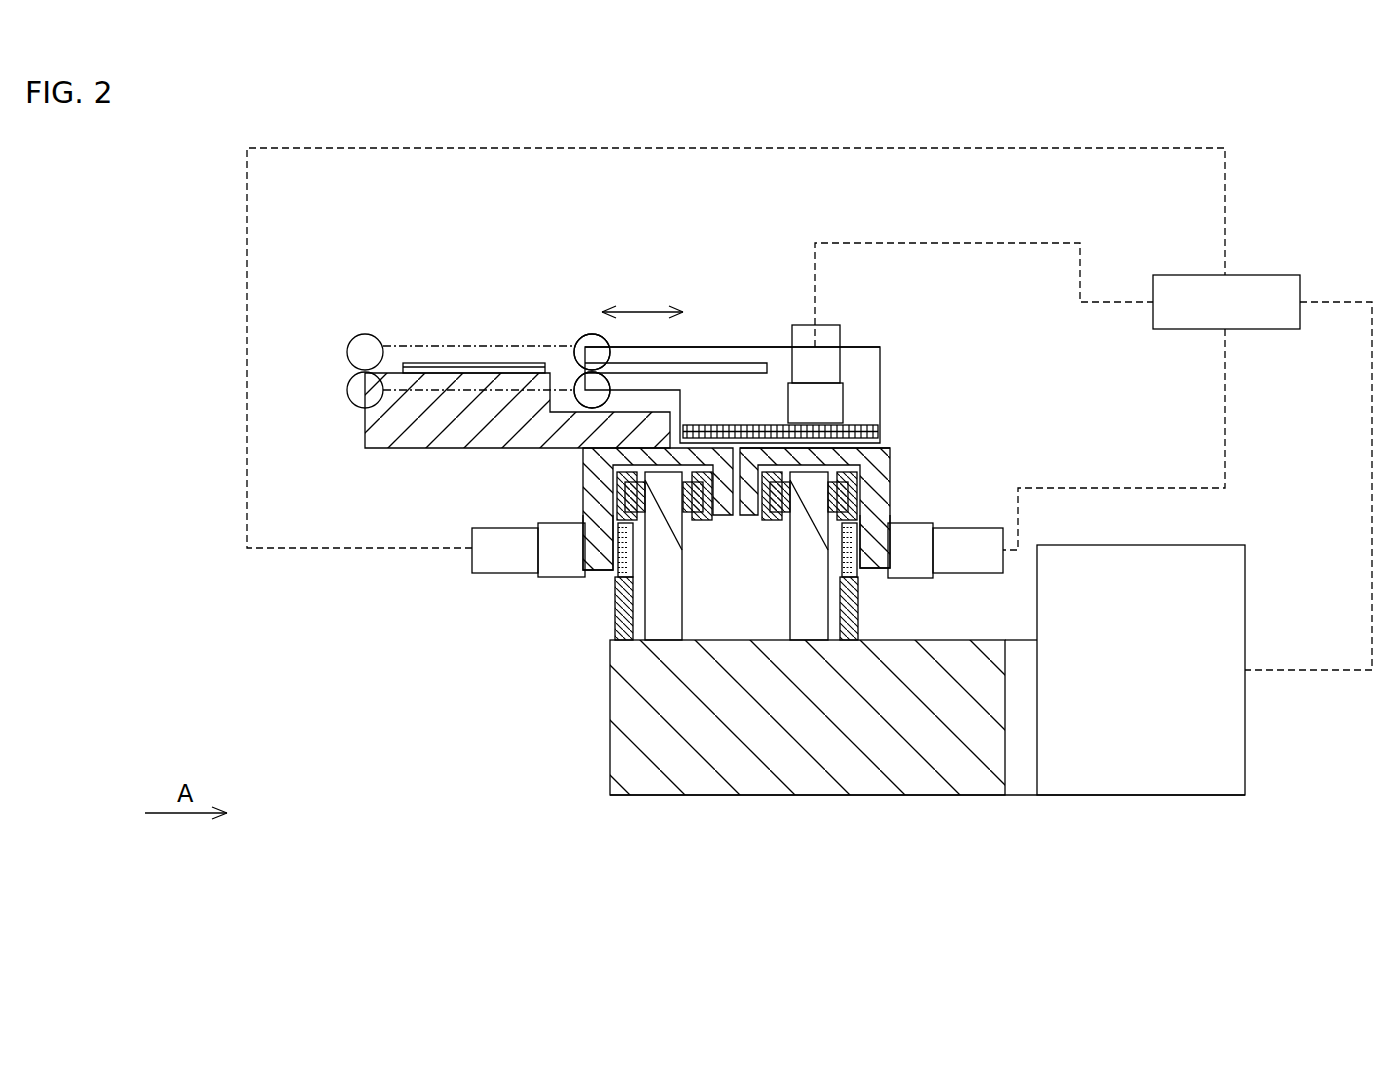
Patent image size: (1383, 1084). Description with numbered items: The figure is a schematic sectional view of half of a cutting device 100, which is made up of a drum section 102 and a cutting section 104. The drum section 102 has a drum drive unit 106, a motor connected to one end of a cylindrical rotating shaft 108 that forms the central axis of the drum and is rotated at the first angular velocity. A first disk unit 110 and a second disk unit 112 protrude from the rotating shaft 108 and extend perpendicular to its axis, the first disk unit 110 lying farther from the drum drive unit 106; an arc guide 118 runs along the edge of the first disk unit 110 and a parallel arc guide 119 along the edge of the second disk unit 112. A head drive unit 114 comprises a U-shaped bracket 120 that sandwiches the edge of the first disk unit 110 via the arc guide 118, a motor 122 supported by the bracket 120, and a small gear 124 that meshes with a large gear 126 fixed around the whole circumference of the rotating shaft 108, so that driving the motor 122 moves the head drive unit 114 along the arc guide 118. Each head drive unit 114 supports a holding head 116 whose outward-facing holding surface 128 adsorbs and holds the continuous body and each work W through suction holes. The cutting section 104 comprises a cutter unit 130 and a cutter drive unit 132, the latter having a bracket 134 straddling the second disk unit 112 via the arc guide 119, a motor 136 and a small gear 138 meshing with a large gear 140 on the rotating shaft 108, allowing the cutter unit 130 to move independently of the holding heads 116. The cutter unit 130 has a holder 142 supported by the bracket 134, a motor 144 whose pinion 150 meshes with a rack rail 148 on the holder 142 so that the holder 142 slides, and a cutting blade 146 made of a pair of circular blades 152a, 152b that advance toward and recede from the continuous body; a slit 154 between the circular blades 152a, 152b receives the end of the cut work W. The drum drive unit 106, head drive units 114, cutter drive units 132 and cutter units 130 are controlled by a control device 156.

The cutting device 100 is at (848, 920).
The drum section 102 is at (926, 799).
The cutting section 104 is at (770, 300).
The drum drive unit 106 is at (1245, 567).
The rotating shaft 108 is at (610, 757).
The first disk unit 110 is at (686, 605).
The second disk unit 112 is at (792, 605).
The head drive unit 114 is at (597, 572).
The holding head 116 is at (364, 437).
The arc guide 118 is at (620, 455).
The arc guide 119 is at (892, 466).
The bracket 120 is at (583, 493).
The motor 122 is at (485, 580).
The small gear 124 is at (633, 552).
The large gear 126 is at (612, 627).
The holding surface 128 is at (396, 371).
The cutter unit 130 is at (884, 347).
The cutter drive unit 132 is at (892, 446).
The bracket 134 is at (893, 497).
The motor 136 is at (975, 523).
The small gear 138 is at (842, 563).
The large gear 140 is at (860, 615).
The holder 142 is at (715, 347).
The motor 144 is at (846, 325).
The cutting blade 146 is at (632, 235).
The rack rail 148 is at (880, 430).
The pinion 150 is at (843, 402).
The circular blade 152a is at (593, 334).
The circular blade 152b is at (573, 380).
The slit 154 is at (748, 363).
The control device 156 is at (1250, 275).
The work W is at (490, 363).